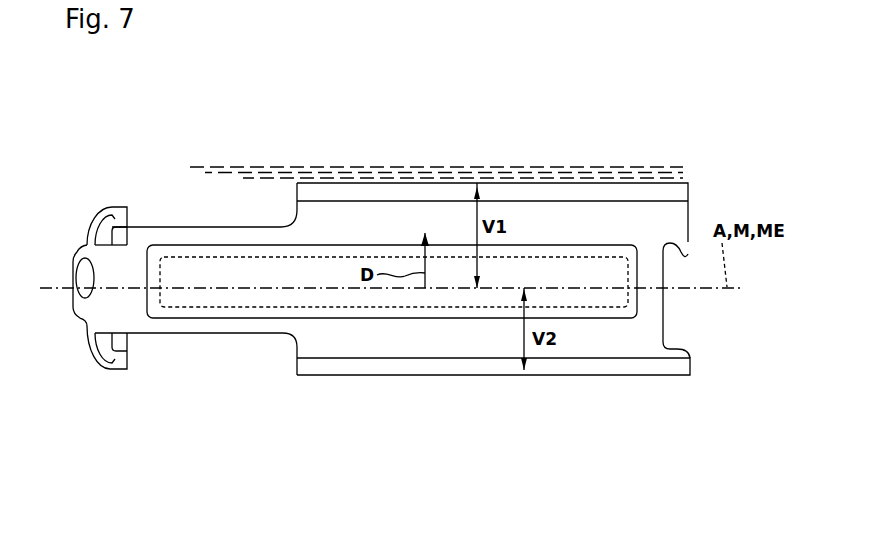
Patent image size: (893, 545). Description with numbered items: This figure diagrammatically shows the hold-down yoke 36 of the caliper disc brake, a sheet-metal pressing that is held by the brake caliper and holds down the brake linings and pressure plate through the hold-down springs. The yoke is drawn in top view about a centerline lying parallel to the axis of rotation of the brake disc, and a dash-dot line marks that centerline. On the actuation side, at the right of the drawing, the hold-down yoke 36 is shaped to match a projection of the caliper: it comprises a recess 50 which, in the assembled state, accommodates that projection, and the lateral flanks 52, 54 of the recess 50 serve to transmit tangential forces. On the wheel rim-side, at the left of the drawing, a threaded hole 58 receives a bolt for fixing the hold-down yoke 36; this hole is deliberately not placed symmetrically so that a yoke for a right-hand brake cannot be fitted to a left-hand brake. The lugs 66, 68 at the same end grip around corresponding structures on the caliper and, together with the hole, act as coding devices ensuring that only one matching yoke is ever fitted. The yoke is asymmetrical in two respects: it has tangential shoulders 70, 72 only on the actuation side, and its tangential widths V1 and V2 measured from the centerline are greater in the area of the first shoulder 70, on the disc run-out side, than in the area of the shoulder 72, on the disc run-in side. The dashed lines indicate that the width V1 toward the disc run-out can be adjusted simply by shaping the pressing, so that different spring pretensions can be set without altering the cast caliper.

The hold-down yoke 36 is at (166, 216).
The recess 50 is at (702, 310).
The lateral flank 52 is at (688, 254).
The lateral flank 54 is at (677, 349).
The threaded hole 58 is at (88, 277).
The lug 66 is at (113, 215).
The lug 68 is at (112, 369).
The tangential shoulder 70 is at (357, 183).
The tangential shoulder 72 is at (310, 377).